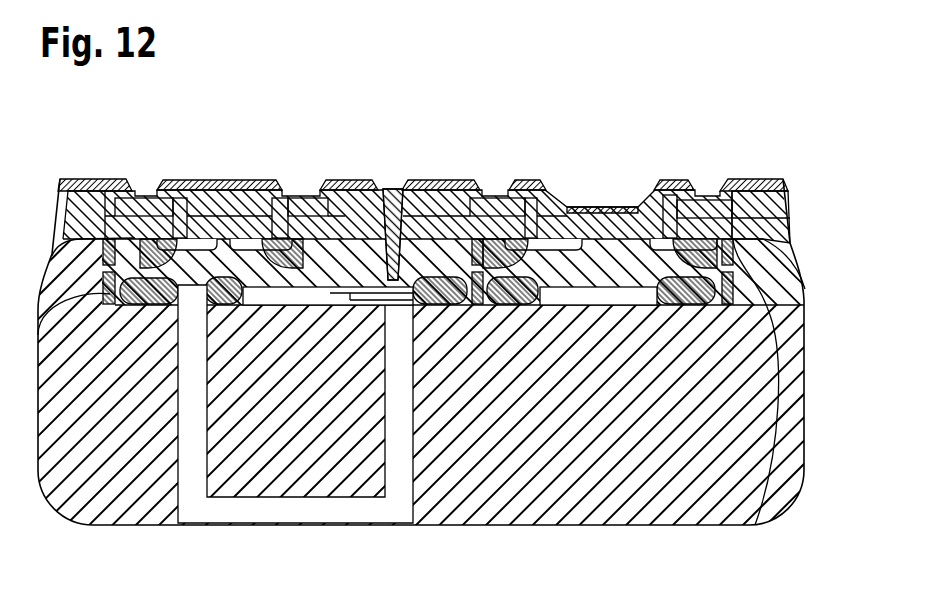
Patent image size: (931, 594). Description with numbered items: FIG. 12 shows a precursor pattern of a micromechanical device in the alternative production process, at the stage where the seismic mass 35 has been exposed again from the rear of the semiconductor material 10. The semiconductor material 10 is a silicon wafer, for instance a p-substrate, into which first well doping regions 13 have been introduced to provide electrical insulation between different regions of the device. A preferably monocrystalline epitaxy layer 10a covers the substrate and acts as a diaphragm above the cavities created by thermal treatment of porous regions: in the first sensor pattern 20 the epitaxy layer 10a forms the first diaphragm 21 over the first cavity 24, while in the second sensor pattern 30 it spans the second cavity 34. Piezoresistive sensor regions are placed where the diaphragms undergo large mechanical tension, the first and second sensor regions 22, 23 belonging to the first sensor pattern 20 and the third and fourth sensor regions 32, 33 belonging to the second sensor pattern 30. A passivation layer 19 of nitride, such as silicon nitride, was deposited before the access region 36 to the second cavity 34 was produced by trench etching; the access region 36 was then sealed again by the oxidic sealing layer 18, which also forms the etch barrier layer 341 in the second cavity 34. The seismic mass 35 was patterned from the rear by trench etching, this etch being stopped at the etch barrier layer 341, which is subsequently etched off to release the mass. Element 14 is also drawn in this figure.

The semiconductor material 10 is at (593, 497).
The epitaxy layer 10a is at (755, 505).
The first well doping region 13 is at (789, 201).
The conductor track 14 is at (760, 239).
The sealing layer 18 is at (88, 188).
The passivation layer 19 is at (749, 197).
The first sensor pattern 20 is at (727, 88).
The first diaphragm 21 is at (657, 135).
The first sensor region 22 is at (663, 240).
The second sensor region 23 is at (522, 200).
The first cavity 24 is at (597, 297).
The second sensor pattern 30 is at (93, 85).
The third sensor region 32 is at (248, 240).
The fourth sensor region 33 is at (185, 236).
The second cavity 34 is at (312, 293).
The etch barrier layer 341 is at (370, 297).
The seismic mass 35 is at (263, 437).
The access region 36 is at (388, 190).